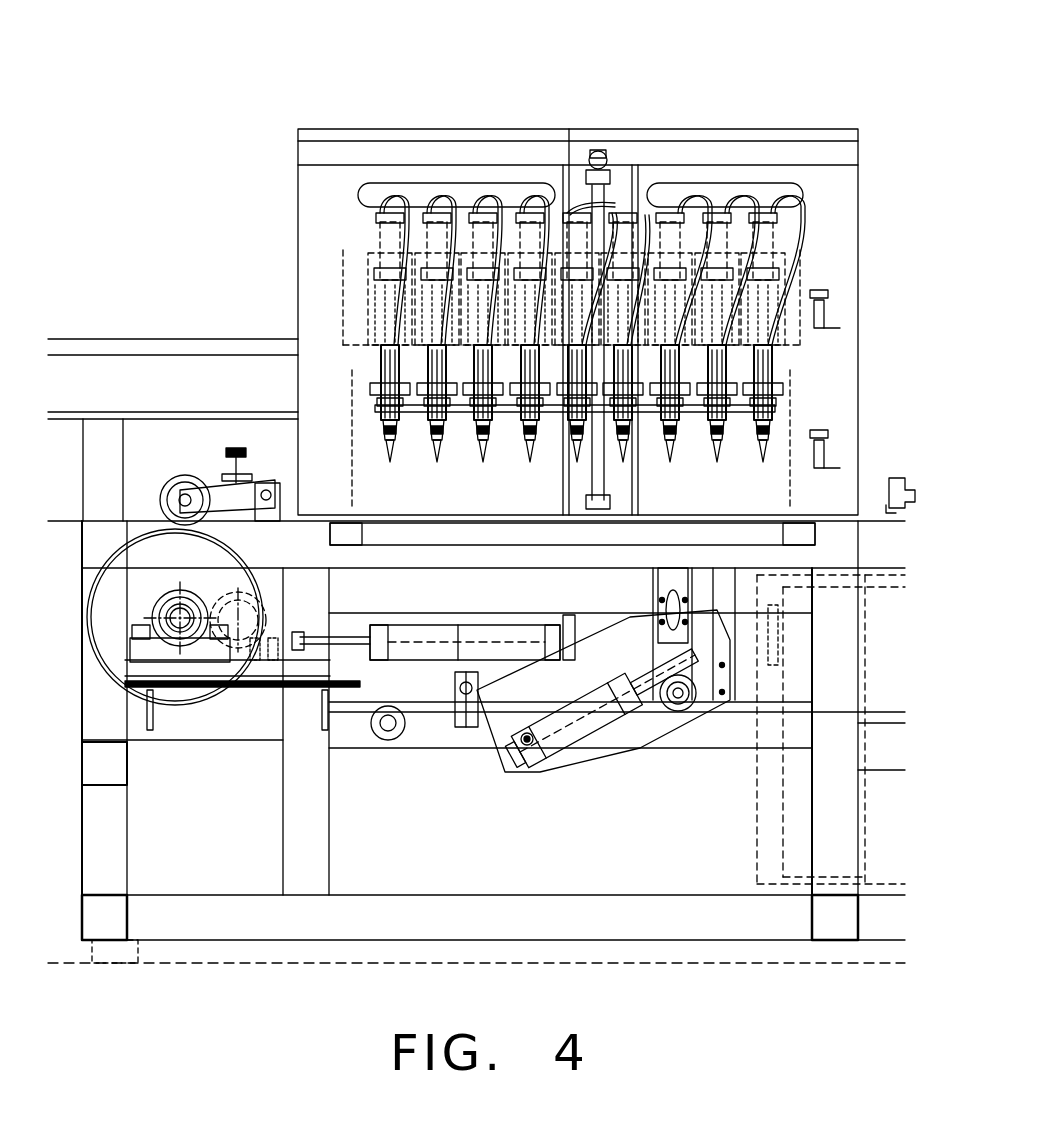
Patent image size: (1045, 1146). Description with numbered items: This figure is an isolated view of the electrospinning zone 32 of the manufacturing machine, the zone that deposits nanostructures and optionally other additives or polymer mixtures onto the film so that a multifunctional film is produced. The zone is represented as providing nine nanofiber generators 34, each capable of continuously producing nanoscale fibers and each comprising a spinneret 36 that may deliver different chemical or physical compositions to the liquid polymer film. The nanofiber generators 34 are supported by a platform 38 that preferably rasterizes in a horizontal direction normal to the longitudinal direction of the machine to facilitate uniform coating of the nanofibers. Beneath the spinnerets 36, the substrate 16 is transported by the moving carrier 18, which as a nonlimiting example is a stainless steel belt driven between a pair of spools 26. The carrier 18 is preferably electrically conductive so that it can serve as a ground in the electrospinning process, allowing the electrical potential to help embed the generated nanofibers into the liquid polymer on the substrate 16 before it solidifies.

The electrospinning zone 32 is at (238, 100).
The nanofiber generator 34 is at (832, 272).
The spinneret 36 is at (772, 452).
The platform 38 is at (343, 410).
The substrate 16 is at (98, 521).
The carrier 18 is at (890, 523).
The spool 26 is at (108, 683).